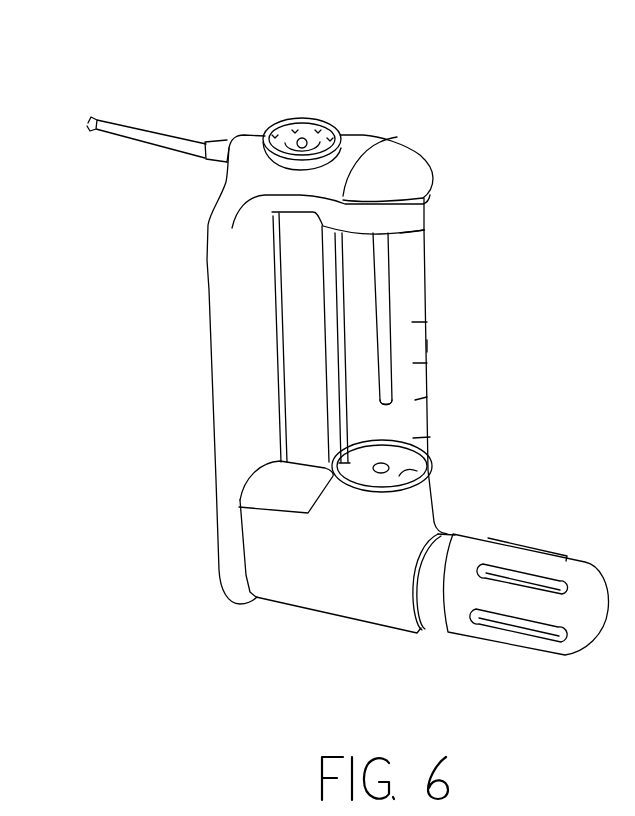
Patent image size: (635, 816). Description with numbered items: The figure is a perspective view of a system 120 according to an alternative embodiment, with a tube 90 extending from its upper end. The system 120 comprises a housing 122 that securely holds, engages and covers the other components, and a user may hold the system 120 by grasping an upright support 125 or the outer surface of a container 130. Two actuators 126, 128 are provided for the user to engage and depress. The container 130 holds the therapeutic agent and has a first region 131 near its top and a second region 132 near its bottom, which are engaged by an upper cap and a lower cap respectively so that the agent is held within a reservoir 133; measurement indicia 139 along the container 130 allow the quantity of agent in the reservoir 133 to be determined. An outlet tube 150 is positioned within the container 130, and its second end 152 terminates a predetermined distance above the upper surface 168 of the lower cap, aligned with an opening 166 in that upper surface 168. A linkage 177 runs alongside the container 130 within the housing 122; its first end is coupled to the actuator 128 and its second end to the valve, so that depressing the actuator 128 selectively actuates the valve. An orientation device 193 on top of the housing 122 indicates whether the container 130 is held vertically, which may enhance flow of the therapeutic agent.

The tube 90 is at (159, 124).
The system 120 is at (243, 91).
The orientation device 193 is at (328, 112).
The actuator 128 is at (407, 168).
The first region 131 is at (424, 226).
The container 130 is at (436, 277).
The outlet tube 150 is at (397, 309).
The reservoir 133 is at (412, 343).
The measurement indicia 139 is at (420, 367).
The second end 152 is at (390, 409).
The second region 132 is at (430, 455).
The upper surface 168 is at (425, 473).
The opening 166 is at (380, 474).
The upright support 125 is at (232, 350).
The linkage 177 is at (330, 352).
The housing 122 is at (297, 580).
The actuator 126 is at (572, 642).